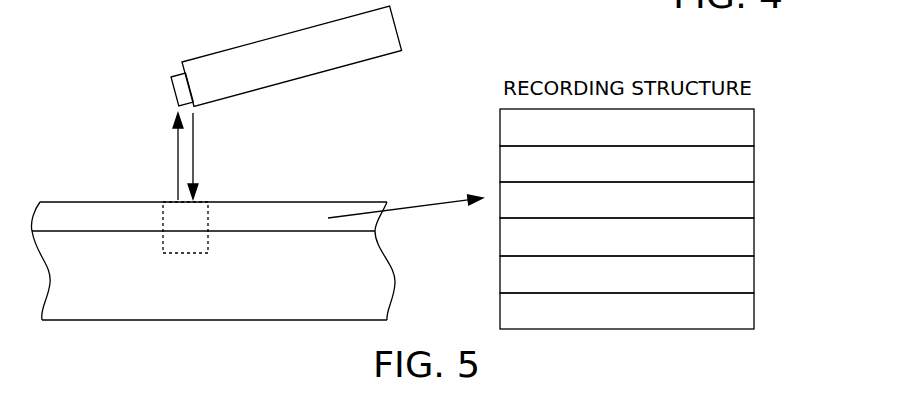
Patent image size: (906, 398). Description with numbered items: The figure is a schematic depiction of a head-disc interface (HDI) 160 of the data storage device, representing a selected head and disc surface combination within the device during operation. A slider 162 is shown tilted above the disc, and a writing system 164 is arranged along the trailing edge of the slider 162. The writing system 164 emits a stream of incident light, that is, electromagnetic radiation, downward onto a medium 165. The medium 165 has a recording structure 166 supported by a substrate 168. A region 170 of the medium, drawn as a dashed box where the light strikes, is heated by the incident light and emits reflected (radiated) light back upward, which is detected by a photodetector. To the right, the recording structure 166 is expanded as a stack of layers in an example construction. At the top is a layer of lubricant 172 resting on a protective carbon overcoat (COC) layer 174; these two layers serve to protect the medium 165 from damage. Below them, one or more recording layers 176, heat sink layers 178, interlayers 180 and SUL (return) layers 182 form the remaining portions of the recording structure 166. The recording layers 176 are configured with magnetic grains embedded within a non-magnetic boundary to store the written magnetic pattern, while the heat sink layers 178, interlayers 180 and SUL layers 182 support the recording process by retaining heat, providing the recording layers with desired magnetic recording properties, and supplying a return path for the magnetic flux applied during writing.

The head-disc interface (HDI) 160 is at (112, 22).
The slider 162 is at (273, 37).
The writing system 164 is at (177, 75).
The medium 165 is at (327, 142).
The recording structure 166 is at (300, 210).
The substrate 168 is at (272, 305).
The region 170 is at (185, 253).
The lubricant 172 is at (755, 131).
The carbon overcoat (COC) layer 174 is at (755, 168).
The recording layers 176 is at (755, 205).
The heat sink layers 178 is at (755, 240).
The interlayers 180 is at (755, 276).
The SUL (return) layers 182 is at (755, 313).